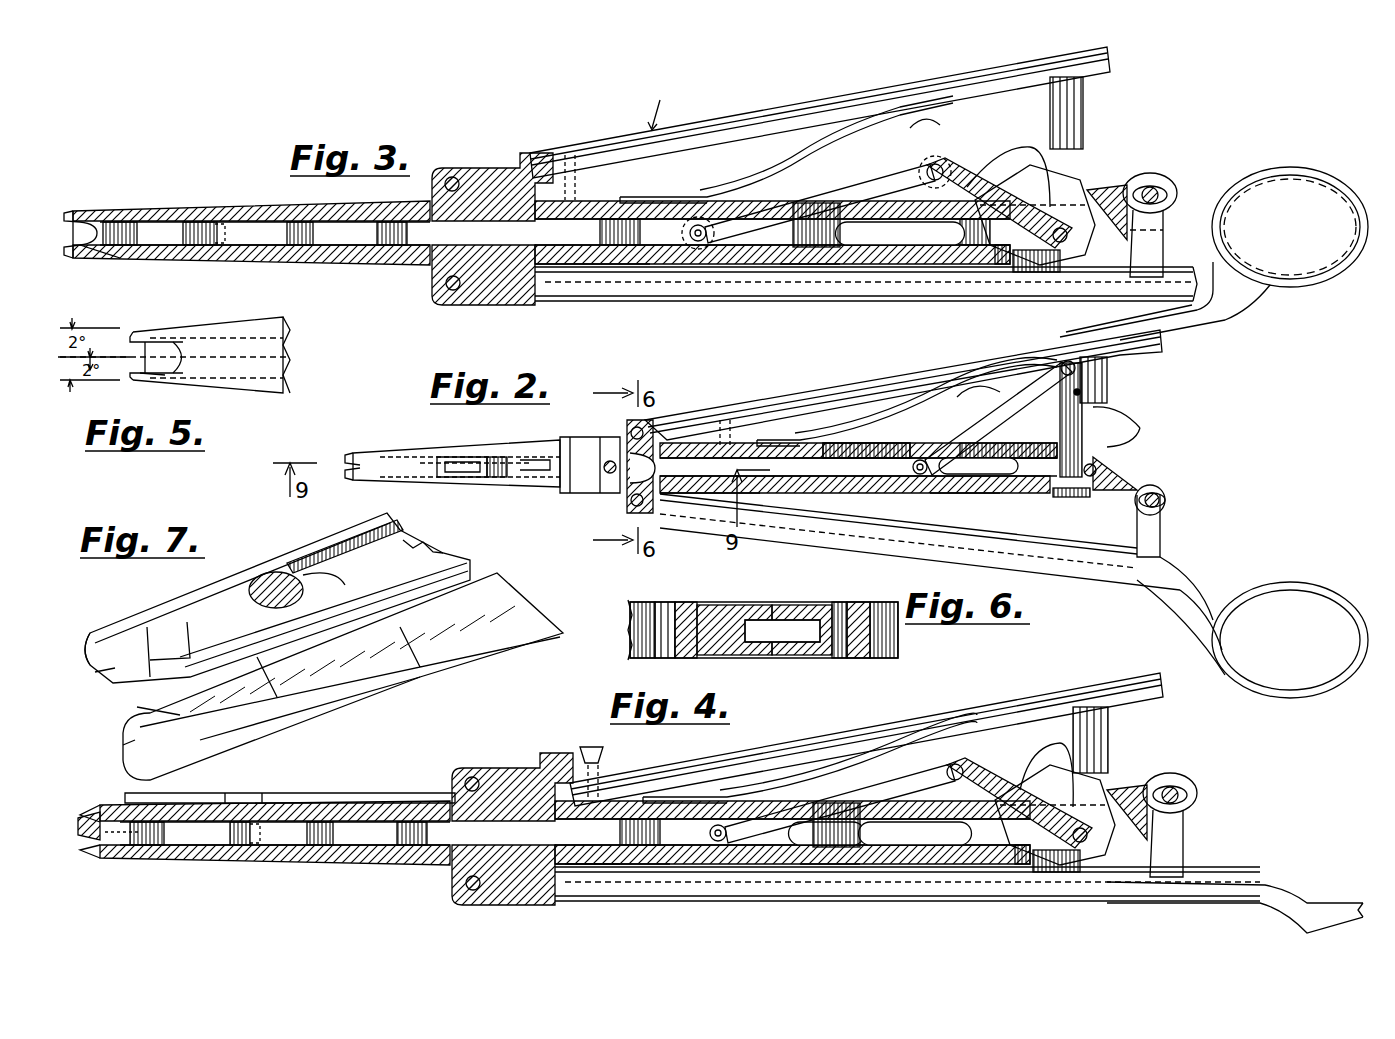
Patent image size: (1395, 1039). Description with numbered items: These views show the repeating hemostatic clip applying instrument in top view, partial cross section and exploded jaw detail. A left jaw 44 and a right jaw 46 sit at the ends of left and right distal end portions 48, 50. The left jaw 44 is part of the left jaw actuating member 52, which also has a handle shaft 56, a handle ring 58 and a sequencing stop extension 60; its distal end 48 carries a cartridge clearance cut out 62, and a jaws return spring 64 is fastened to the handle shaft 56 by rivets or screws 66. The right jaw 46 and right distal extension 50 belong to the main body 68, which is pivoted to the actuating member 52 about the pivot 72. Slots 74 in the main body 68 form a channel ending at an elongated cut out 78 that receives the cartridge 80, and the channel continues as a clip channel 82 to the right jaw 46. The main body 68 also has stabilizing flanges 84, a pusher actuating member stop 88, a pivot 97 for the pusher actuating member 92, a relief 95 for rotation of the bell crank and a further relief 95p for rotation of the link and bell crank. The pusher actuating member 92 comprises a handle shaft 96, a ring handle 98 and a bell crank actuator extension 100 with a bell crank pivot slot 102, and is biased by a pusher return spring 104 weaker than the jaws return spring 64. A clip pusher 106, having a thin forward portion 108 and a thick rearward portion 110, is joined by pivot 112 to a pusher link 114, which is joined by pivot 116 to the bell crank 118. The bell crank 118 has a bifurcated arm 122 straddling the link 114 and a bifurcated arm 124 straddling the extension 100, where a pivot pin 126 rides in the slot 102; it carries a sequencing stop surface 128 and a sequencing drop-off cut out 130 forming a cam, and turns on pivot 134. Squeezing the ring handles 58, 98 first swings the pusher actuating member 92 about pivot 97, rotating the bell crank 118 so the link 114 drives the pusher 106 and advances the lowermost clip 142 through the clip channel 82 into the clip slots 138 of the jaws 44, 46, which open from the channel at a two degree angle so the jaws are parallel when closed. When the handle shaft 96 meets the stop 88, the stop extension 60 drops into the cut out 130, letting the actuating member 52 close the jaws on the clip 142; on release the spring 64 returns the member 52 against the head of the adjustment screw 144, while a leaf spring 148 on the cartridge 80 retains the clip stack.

In FIG. 3, the left jaw 44 is at (100, 258).
In FIG. 4, the left jaw 44 is at (85, 842).
In FIG. 5, the left jaw 44 is at (158, 380).
In FIG. 7, the left jaw 44 is at (185, 764).
In FIG. 3, the right jaw 46 is at (70, 211).
In FIG. 4, the right jaw 46 is at (92, 819).
In FIG. 2, the right jaw 46 is at (372, 452).
In FIG. 5, the right jaw 46 is at (140, 334).
In FIG. 7, the right jaw 46 is at (92, 632).
In FIG. 4, the left distal end portion 48 is at (290, 779).
In FIG. 7, the left distal end portion 48 is at (265, 740).
In FIG. 3, the right distal end portion 50 is at (145, 212).
In FIG. 4, the right distal end portion 50 is at (275, 812).
In FIG. 2, the right distal end portion 50 is at (525, 442).
In FIG. 5, the right distal end portion 50 is at (238, 322).
In FIG. 3, the left jaw actuating member 52 is at (663, 102).
In FIG. 3, the handle shaft 56 is at (768, 120).
In FIG. 4, the handle shaft 56 is at (866, 738).
In FIG. 2, the handle shaft 56 is at (860, 392).
In FIG. 6, the handle shaft 56 is at (628, 605).
In FIG. 3, the handle ring 58 is at (1300, 175).
In FIG. 3, the sequencing stop extension 60 is at (1085, 108).
In FIG. 4, the sequencing stop extension 60 is at (1115, 740).
In FIG. 2, the sequencing stop extension 60 is at (1107, 377).
In FIG. 4, the cartridge clearance cut out 62 is at (241, 784).
In FIG. 7, the cartridge clearance cut out 62 is at (388, 700).
In FIG. 3, the jaws return spring 64 is at (795, 150).
In FIG. 4, the jaws return spring 64 is at (810, 749).
In FIG. 2, the jaws return spring 64 is at (803, 430).
In FIG. 3, the rivets or screws 66 is at (938, 125).
In FIG. 2, the rivets or screws 66 is at (960, 385).
In FIG. 3, the main body 68 is at (632, 272).
In FIG. 4, the main body 68 is at (907, 896).
In FIG. 2, the main body 68 is at (830, 500).
In FIG. 3, the pivot 72 is at (453, 177).
In FIG. 4, the pivot 72 is at (469, 758).
In FIG. 2, the pivot 72 is at (630, 430).
In FIG. 6, the pivot 72 is at (695, 605).
In FIG. 3, the slots 74 is at (820, 264).
In FIG. 4, the slots 74 is at (861, 893).
In FIG. 2, the slots 74 is at (975, 493).
In FIG. 2, the elongated cut out 78 is at (507, 483).
In FIG. 6, the elongated cut out 78 is at (720, 605).
In FIG. 7, the elongated cut out 78 is at (378, 520).
In FIG. 2, the cartridge 80 is at (465, 457).
In FIG. 4, the clip channel 82 is at (136, 862).
In FIG. 2, the clip channel 82 is at (398, 455).
In FIG. 6, the clip channel 82 is at (768, 610).
In FIG. 7, the clip channel 82 is at (280, 572).
In FIG. 3, the stabilizing flanges 84 is at (498, 168).
In FIG. 4, the stabilizing flanges 84 is at (502, 820).
In FIG. 2, the stabilizing flanges 84 is at (660, 425).
In FIG. 6, the stabilizing flanges 84 is at (660, 610).
In FIG. 3, the pusher actuating member stop 88 is at (1040, 272).
In FIG. 4, the pusher actuating member stop 88 is at (1059, 887).
In FIG. 2, the pusher actuating member stop 88 is at (1077, 497).
In FIG. 3, the pusher actuating member 92 is at (890, 301).
In FIG. 4, the pusher actuating member 92 is at (959, 907).
In FIG. 2, the pusher actuating member 92 is at (1060, 565).
In FIG. 3, the relief 95 is at (1000, 264).
In FIG. 4, the relief 95 is at (1017, 885).
In FIG. 3, the relief 95p is at (840, 210).
In FIG. 4, the relief 95p is at (871, 793).
In FIG. 2, the relief 95p is at (905, 455).
In FIG. 3, the handle shaft 96 is at (570, 272).
In FIG. 4, the handle shaft 96 is at (620, 893).
In FIG. 2, the handle shaft 96 is at (855, 520).
In FIG. 6, the handle shaft 96 is at (898, 630).
In FIG. 3, the pivot 97 is at (446, 285).
In FIG. 4, the pivot 97 is at (431, 885).
In FIG. 2, the pivot 97 is at (630, 503).
In FIG. 6, the pivot 97 is at (838, 658).
In FIG. 2, the ring handle 98 is at (1300, 582).
In FIG. 3, the bell crank actuator extension 100 is at (1152, 240).
In FIG. 4, the bell crank actuator extension 100 is at (1196, 825).
In FIG. 2, the bell crank actuator extension 100 is at (1162, 530).
In FIG. 3, the bell crank pivot slot 102 is at (1148, 188).
In FIG. 4, the bell crank pivot slot 102 is at (1211, 781).
In FIG. 2, the bell crank pivot slot 102 is at (1160, 497).
In FIG. 3, the pusher return spring 104 is at (668, 282).
In FIG. 4, the pusher return spring 104 is at (912, 901).
In FIG. 2, the pusher return spring 104 is at (900, 535).
In FIG. 3, the clip pusher 106 is at (640, 247).
In FIG. 4, the clip pusher 106 is at (792, 832).
In FIG. 2, the clip pusher 106 is at (858, 462).
In FIG. 3, the thin forward portion 108 is at (355, 247).
In FIG. 4, the thin forward portion 108 is at (285, 857).
In FIG. 6, the thin forward portion 108 is at (755, 642).
In FIG. 5, the thin forward portion 108 is at (300, 355).
In FIG. 4, the thick rearward portion 110 is at (609, 893).
In FIG. 3, the pivot 112 is at (700, 225).
In FIG. 4, the pivot 112 is at (711, 803).
In FIG. 2, the pivot 112 is at (917, 475).
In FIG. 3, the pusher link 114 is at (800, 190).
In FIG. 4, the pusher link 114 is at (840, 799).
In FIG. 2, the pusher link 114 is at (1002, 412).
In FIG. 3, the pivot 116 is at (936, 165).
In FIG. 4, the pivot 116 is at (982, 757).
In FIG. 2, the pivot 116 is at (1066, 360).
In FIG. 3, the bell crank 118 is at (1035, 197).
In FIG. 4, the bell crank 118 is at (1055, 815).
In FIG. 2, the bell crank 118 is at (1062, 430).
In FIG. 3, the bifurcated arm 122 is at (995, 185).
In FIG. 4, the bifurcated arm 122 is at (1019, 786).
In FIG. 2, the bifurcated arm 122 is at (1080, 390).
In FIG. 3, the bifurcated arm 124 is at (1160, 205).
In FIG. 4, the bifurcated arm 124 is at (1158, 785).
In FIG. 2, the bifurcated arm 124 is at (1120, 485).
In FIG. 3, the pivot pin 126 is at (1162, 188).
In FIG. 4, the pivot pin 126 is at (1203, 769).
In FIG. 2, the pivot pin 126 is at (1160, 495).
In FIG. 3, the sequencing stop surface 128 is at (1027, 153).
In FIG. 4, the sequencing stop surface 128 is at (1046, 721).
In FIG. 2, the sequencing stop surface 128 is at (1140, 428).
In FIG. 3, the sequencing drop-off cut out 130 is at (1052, 165).
In FIG. 4, the sequencing drop-off cut out 130 is at (1108, 775).
In FIG. 2, the sequencing drop-off cut out 130 is at (1130, 440).
In FIG. 3, the pivot 134 is at (1053, 235).
In FIG. 4, the pivot 134 is at (1112, 849).
In FIG. 2, the pivot 134 is at (1083, 475).
In FIG. 5, the clip slots 138 is at (145, 338).
In FIG. 7, the clip slots 138 is at (112, 678).
In FIG. 3, the lowermost clip 142 is at (90, 247).
In FIG. 5, the lowermost clip 142 is at (183, 373).
In FIG. 3, the adjustment screw 144 is at (578, 155).
In FIG. 4, the adjustment screw 144 is at (581, 752).
In FIG. 2, the adjustment screw 144 is at (725, 420).
In FIG. 2, the leaf spring 148 is at (540, 475).